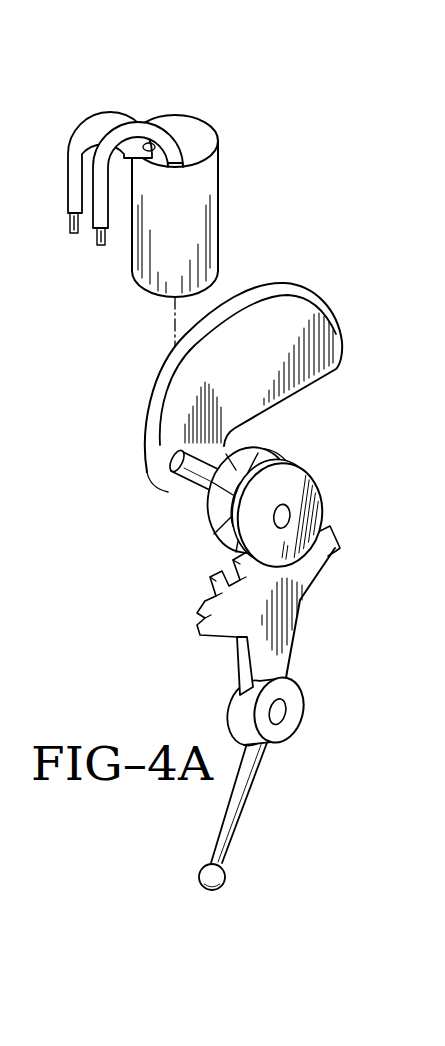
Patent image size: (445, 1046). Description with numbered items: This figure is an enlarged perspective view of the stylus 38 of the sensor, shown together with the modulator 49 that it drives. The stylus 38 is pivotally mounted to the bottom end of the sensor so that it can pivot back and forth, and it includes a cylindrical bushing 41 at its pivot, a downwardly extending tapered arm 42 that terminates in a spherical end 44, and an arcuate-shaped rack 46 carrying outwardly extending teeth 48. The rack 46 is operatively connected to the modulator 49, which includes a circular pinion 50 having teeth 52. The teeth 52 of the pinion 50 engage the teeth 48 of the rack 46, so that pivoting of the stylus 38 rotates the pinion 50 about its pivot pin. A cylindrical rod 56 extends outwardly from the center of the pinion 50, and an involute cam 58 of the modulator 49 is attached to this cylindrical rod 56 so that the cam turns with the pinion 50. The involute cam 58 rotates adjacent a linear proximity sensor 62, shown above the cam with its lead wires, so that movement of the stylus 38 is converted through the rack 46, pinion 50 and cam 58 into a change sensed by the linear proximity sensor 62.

The stylus 38 is at (218, 685).
The cylindrical bushing 41 is at (295, 706).
The tapered arm 42 is at (240, 792).
The spherical end 44 is at (223, 873).
The arcuate-shaped rack 46 is at (298, 600).
The teeth 48 is at (333, 545).
The modulator 49 is at (128, 335).
The circular pinion 50 is at (279, 492).
The teeth 52 is at (226, 507).
The cylindrical rod 56 is at (200, 468).
The involute cam 58 is at (292, 331).
The linear proximity sensor 62 is at (232, 206).